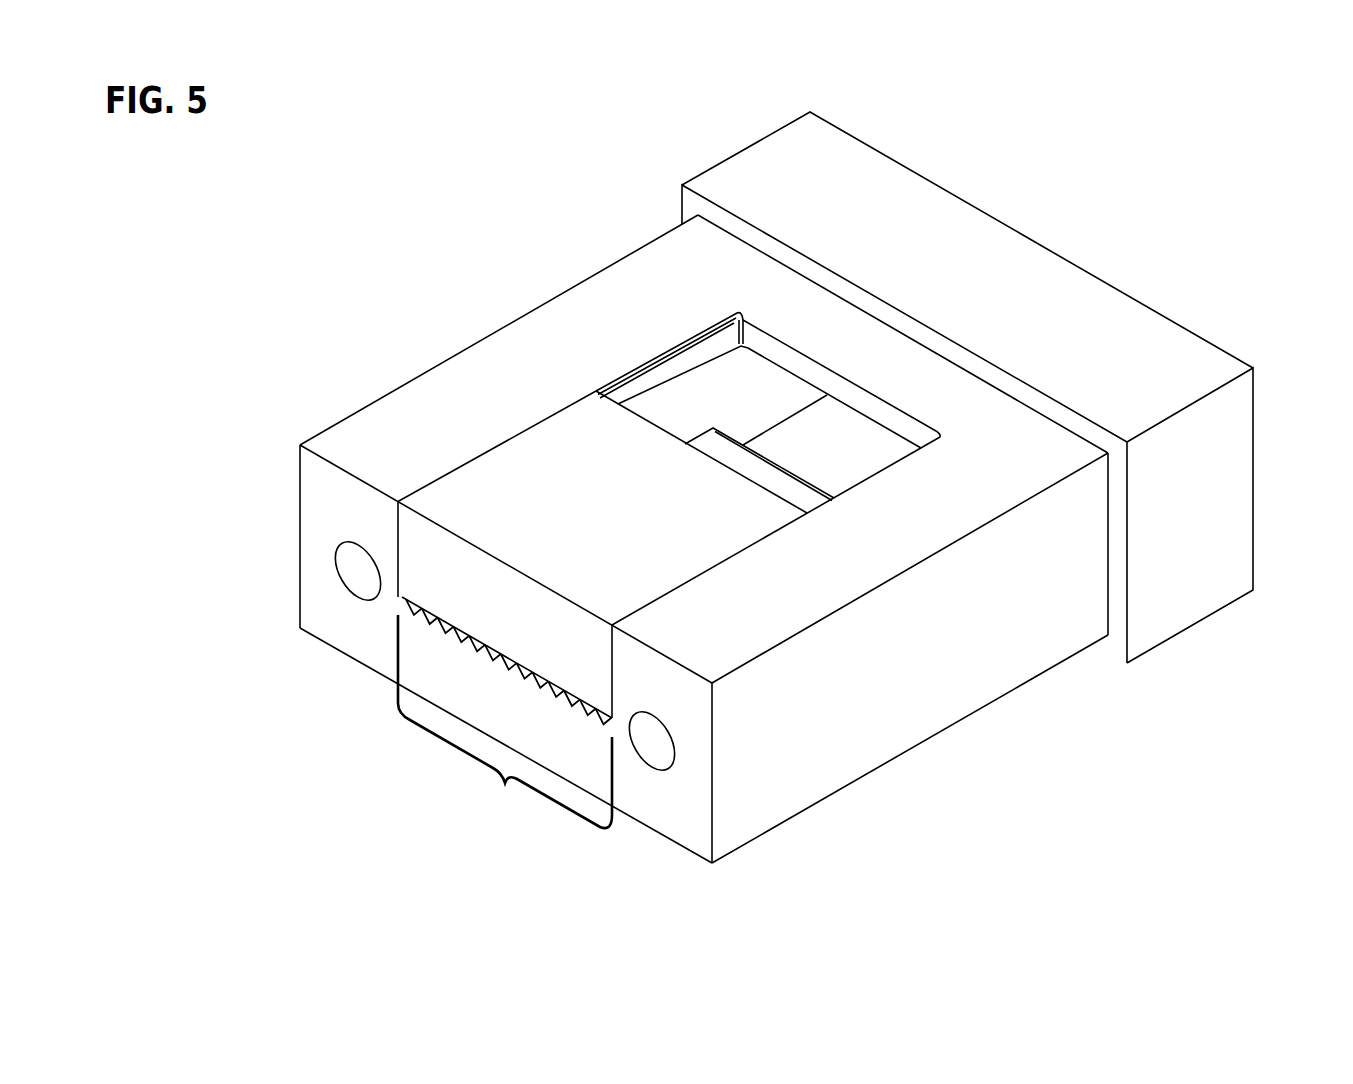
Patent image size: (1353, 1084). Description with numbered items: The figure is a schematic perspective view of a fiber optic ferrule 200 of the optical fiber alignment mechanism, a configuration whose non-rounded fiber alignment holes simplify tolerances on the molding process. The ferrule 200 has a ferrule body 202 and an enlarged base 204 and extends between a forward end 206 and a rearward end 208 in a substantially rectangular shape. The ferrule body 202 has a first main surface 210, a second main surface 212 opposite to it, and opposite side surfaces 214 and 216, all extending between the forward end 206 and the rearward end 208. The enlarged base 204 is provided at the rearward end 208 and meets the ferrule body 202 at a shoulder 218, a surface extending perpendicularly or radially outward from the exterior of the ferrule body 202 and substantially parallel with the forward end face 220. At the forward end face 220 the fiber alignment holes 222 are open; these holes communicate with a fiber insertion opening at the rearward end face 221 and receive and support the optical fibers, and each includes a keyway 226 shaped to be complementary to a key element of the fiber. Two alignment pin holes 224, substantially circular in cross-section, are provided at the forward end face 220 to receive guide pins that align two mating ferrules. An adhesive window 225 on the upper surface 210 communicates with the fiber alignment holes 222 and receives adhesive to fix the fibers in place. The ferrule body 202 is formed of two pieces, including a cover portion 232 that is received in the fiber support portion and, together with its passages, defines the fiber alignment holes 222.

The fiber optic ferrule 200 is at (283, 256).
The ferrule body 202 is at (426, 307).
The enlarged base 204 is at (729, 123).
The forward end 206 is at (739, 891).
The rearward end 208 is at (1210, 651).
The first main surface 210 is at (531, 336).
The second main surface 212 is at (818, 827).
The side surface 214 is at (926, 707).
The side surface 216 is at (345, 405).
The shoulder 218 is at (1117, 651).
The forward end face 220 is at (370, 645).
The rearward end face 221 is at (1180, 305).
The fiber alignment holes 222 is at (505, 783).
The alignment pin holes 224 is at (350, 563).
The adhesive window 225 is at (757, 402).
The keyway 226 is at (594, 713).
The cover portion 232 is at (452, 501).